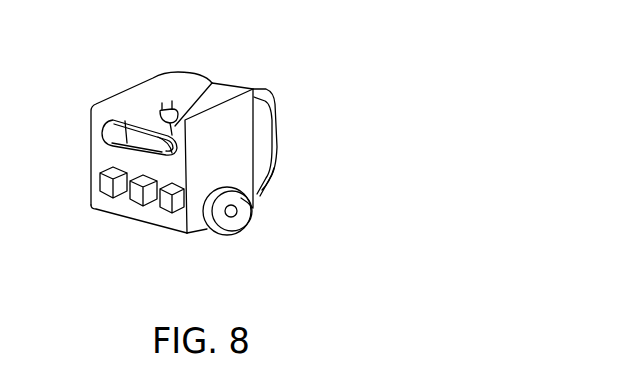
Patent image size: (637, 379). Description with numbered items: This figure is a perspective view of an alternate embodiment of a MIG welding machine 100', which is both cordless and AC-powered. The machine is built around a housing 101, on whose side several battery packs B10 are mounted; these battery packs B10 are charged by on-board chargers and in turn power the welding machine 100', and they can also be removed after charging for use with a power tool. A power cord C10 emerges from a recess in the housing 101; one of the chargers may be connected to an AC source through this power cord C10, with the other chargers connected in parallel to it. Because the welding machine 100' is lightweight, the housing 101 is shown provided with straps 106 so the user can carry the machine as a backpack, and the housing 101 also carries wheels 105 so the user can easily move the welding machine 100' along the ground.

The welding machine 100' is at (200, 162).
The housing 101 is at (218, 96).
The power cord C10 is at (209, 82).
The battery packs B10 is at (165, 212).
The wheels 105 is at (222, 218).
The straps 106 is at (266, 185).